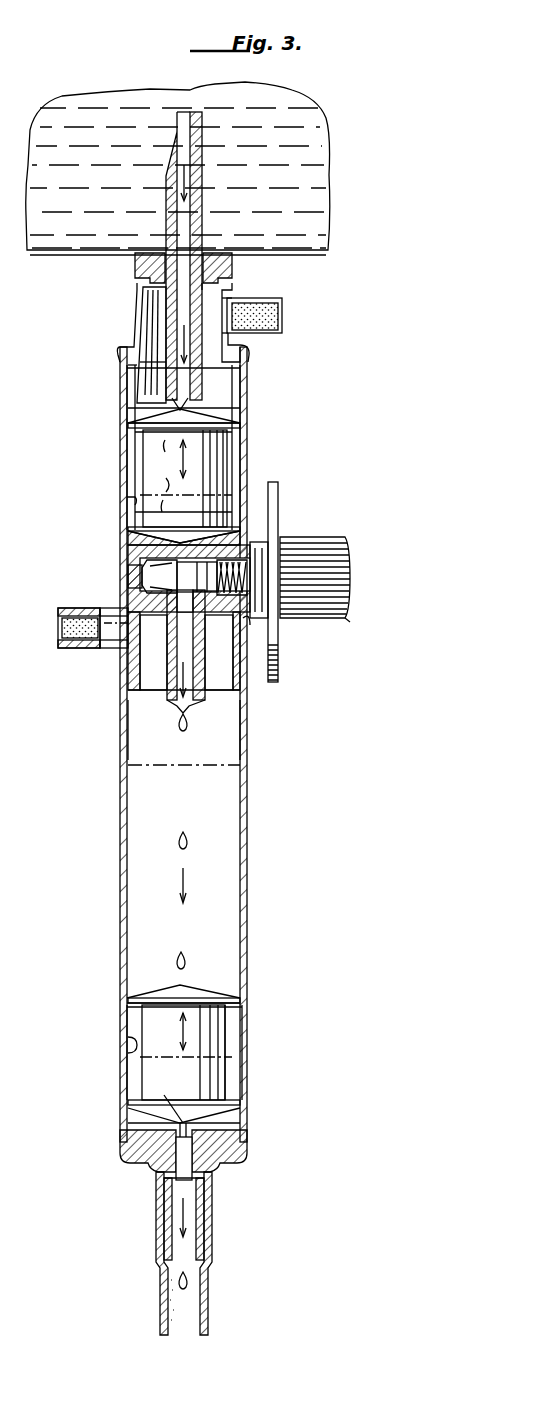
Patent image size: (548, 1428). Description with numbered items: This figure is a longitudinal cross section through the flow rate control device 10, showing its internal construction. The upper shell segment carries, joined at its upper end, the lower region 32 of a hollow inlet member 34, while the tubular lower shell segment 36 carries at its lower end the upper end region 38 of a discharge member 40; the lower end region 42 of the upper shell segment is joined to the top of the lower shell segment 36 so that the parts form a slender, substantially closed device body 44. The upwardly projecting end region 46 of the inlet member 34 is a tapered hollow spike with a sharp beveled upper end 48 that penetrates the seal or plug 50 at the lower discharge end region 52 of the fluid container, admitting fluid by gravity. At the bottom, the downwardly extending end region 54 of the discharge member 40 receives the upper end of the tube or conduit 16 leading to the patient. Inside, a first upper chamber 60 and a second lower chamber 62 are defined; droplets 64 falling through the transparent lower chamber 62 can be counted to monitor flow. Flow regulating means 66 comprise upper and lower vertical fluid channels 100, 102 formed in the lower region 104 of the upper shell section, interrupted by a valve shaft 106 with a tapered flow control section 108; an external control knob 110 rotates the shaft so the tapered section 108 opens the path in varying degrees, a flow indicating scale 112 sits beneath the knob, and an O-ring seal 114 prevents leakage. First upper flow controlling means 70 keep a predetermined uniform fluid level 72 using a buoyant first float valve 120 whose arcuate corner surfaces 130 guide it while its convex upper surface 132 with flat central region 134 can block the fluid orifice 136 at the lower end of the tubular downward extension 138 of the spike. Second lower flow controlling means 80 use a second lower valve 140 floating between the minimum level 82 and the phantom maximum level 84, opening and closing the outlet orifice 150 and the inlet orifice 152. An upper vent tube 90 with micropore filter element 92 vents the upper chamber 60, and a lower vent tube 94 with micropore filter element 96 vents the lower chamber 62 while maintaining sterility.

The flow rate control device 10 is at (318, 930).
The tube or conduit 16 is at (214, 1240).
The lower region of inlet member 32 is at (246, 378).
The inlet member 34 is at (143, 300).
The lower shell segment 36 is at (252, 795).
The upper end region of discharge member 38 is at (242, 1135).
The discharge member 40 is at (257, 1157).
The lower end region of upper shell segment 42 is at (130, 680).
The device body 44 is at (262, 738).
The upwardly-projecting end region of inlet member (spike) 46 is at (205, 212).
The beveled upper end 48 is at (196, 118).
The seal or plug 50 is at (225, 270).
The lower discharge end region of fluid container 52 is at (135, 268).
The downwardly-extending end region of discharge member 54 is at (214, 1196).
The first upper chamber 60 is at (127, 468).
The second lower chamber 62 is at (148, 740).
The droplets 64 is at (188, 840).
The fluid flow regulating means 66 is at (350, 618).
The first upper fluid flow controlling means 70 is at (232, 478).
The predetermined uniform fluid level 72 is at (127, 497).
The second lower fluid flow controlling means 80 is at (232, 1080).
The predetermined minimum level 82 is at (128, 1050).
The preestablished maximum level 84 is at (230, 760).
The upper vent tube 90 is at (285, 300).
The micropore filter element 92 is at (282, 318).
The lower vent tube 94 is at (82, 650).
The micropore filter element 96 is at (66, 632).
The upper vertical fluid channel 100 is at (138, 550).
The lower vertical fluid channel 102 is at (205, 668).
The lower region of upper shell section 104 is at (245, 655).
The valve shaft 106 is at (135, 573).
The tapered flow control section 108 is at (140, 592).
The external control knob 110 is at (340, 537).
The fluid flow indicating scale 112 is at (280, 502).
The O-ring seal 114 is at (250, 632).
The first float valve 120 is at (130, 448).
The arcuate end or corner surfaces 130 is at (250, 445).
The upper surface of upper end cap 132 is at (225, 418).
The flat circular central surface region 134 is at (173, 418).
The fluid orifice 136 is at (178, 402).
The tubular downward extension 138 is at (148, 330).
The second lower valve 140 is at (232, 1035).
The outlet orifice or opening 150 is at (175, 1120).
The inlet orifice or opening 152 is at (176, 718).